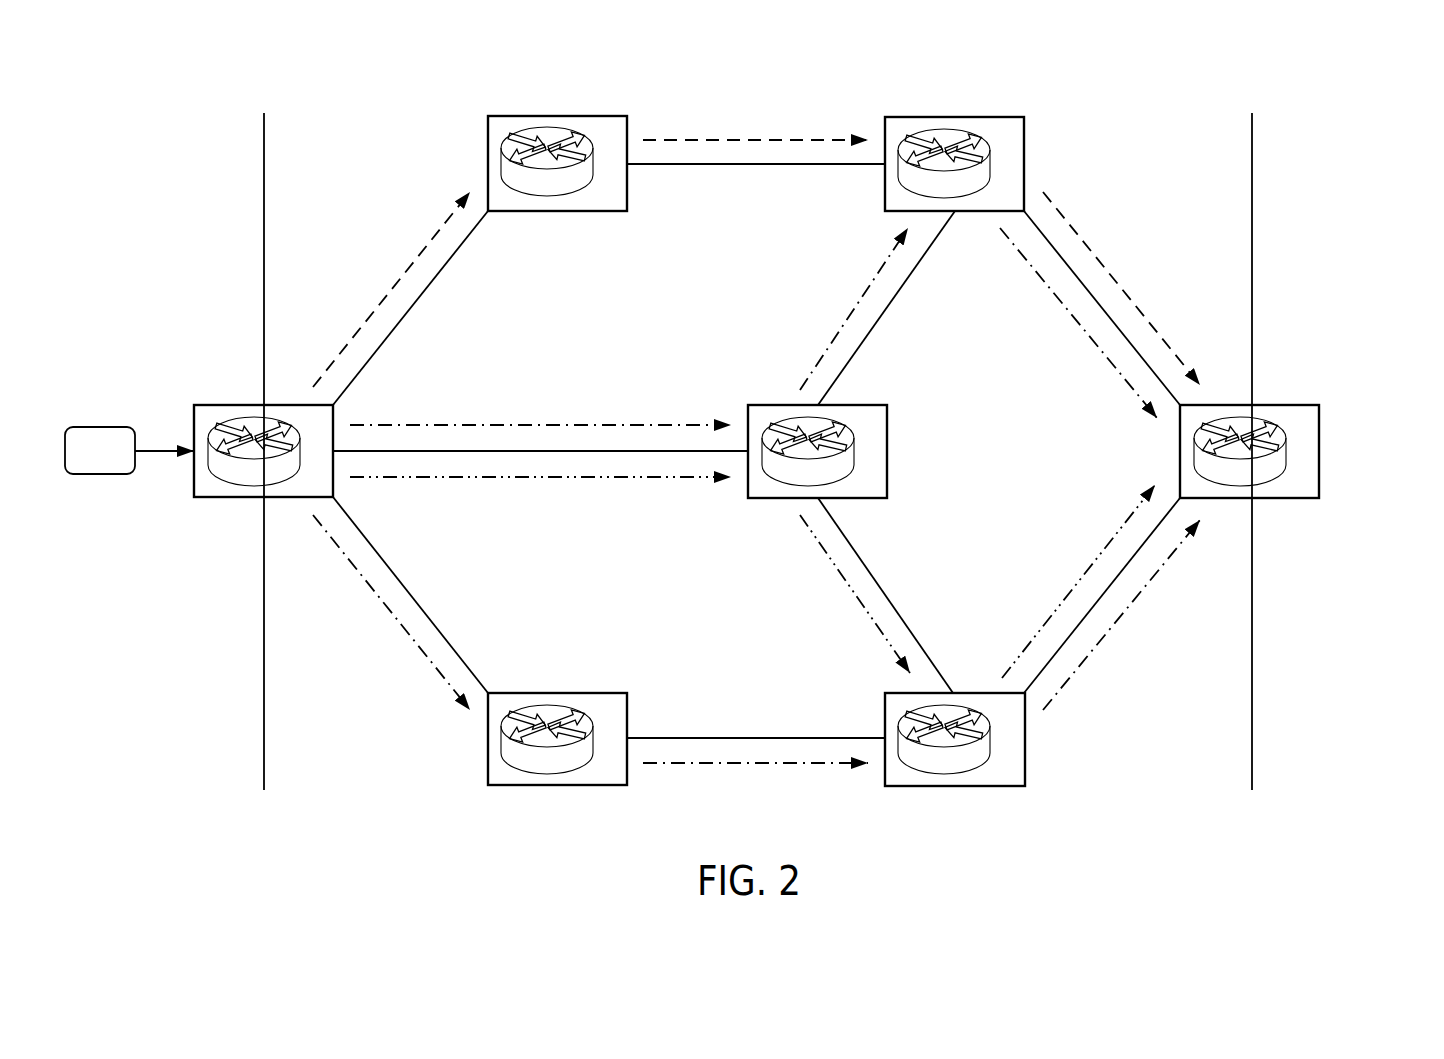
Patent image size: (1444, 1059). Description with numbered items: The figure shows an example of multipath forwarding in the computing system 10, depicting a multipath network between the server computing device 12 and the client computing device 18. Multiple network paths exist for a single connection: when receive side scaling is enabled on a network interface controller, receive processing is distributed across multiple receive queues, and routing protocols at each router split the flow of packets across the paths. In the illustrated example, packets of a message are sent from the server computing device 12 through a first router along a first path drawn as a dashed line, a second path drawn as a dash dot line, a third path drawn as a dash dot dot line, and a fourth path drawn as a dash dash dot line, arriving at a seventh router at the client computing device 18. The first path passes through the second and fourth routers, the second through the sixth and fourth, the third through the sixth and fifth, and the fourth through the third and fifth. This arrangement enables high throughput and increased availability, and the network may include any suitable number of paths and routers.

The computing system 10 is at (1328, 64).
The server computing device 12 is at (164, 451).
The client computing device 18 is at (1347, 451).